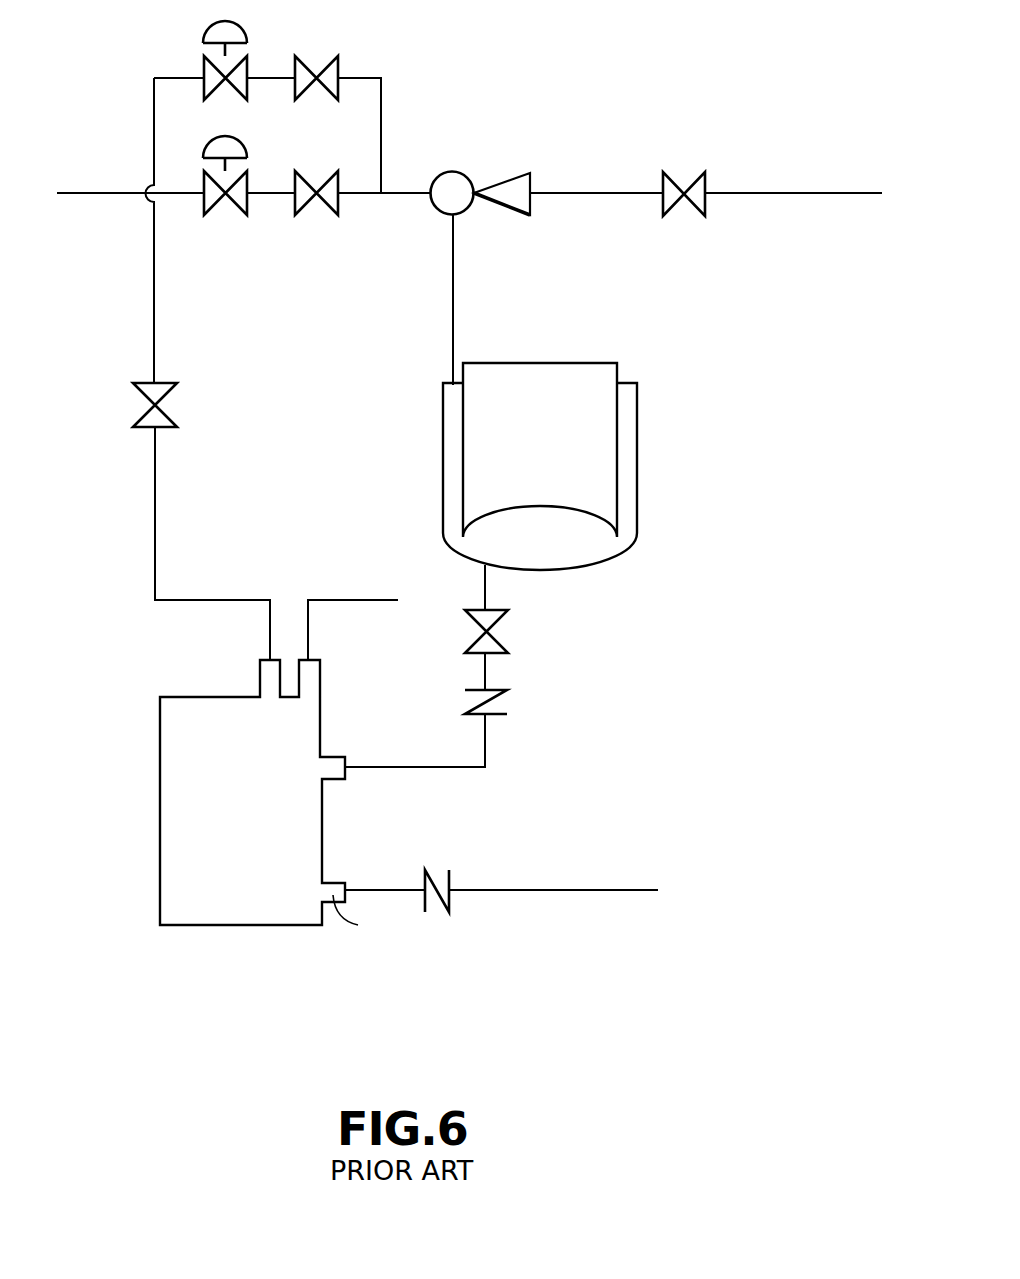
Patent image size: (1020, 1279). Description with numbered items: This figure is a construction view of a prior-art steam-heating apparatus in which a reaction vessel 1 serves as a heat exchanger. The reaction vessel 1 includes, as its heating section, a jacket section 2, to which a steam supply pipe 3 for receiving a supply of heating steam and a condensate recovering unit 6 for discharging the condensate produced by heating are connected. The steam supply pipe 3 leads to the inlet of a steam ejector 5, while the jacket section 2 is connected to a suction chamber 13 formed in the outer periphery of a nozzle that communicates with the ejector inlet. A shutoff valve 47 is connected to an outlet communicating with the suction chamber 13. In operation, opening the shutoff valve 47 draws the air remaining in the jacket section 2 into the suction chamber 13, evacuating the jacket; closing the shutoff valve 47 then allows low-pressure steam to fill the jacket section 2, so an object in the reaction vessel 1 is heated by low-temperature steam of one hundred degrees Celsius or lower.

The reaction vessel 1 is at (482, 373).
The jacket section 2 is at (452, 482).
The steam supply pipe 3 is at (78, 190).
The steam ejector 5 is at (488, 233).
The condensate recovering unit 6 is at (127, 808).
The suction chamber 13 is at (443, 172).
The shutoff valve 47 is at (707, 185).